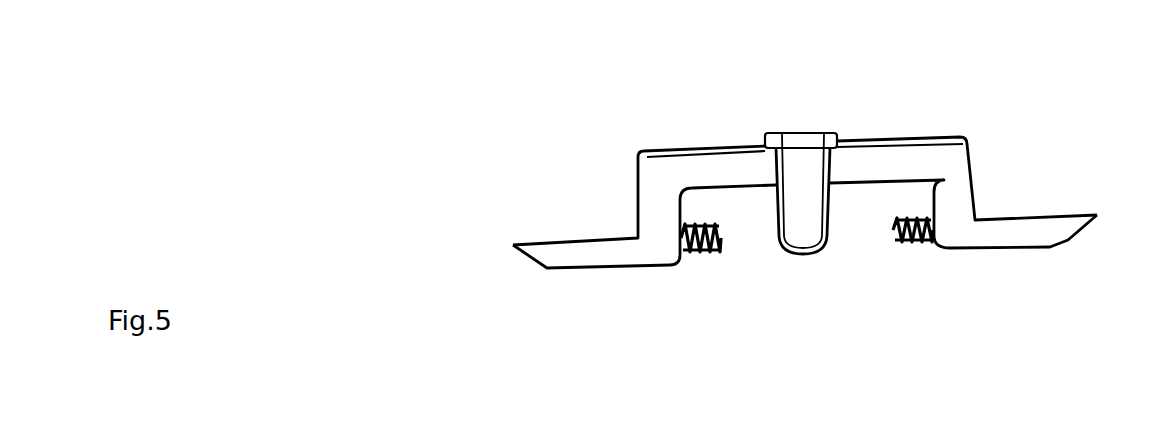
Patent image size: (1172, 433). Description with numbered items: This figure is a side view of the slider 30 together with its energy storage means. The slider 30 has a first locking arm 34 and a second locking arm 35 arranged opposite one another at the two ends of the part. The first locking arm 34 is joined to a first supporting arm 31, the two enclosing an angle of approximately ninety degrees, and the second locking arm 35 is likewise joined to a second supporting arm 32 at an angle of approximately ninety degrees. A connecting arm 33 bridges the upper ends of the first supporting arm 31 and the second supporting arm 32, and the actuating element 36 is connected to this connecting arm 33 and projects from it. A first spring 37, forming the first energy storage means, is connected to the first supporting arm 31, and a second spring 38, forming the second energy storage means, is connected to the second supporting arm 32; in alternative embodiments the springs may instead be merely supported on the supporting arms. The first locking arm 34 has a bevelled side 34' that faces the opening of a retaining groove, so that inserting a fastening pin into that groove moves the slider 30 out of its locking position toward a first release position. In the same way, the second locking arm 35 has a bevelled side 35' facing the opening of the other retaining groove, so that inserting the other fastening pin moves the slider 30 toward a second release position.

The slider 30 is at (814, 174).
The first supporting arm 31 is at (648, 208).
The second supporting arm 32 is at (960, 187).
The connecting arm 33 is at (700, 170).
The first locking arm 34 is at (587, 292).
The bevelled side of first locking arm 34' is at (504, 296).
The second locking arm 35 is at (1010, 277).
The bevelled side of second locking arm 35' is at (1117, 268).
The actuating element 36 is at (810, 237).
The first spring 37 is at (705, 257).
The second spring 38 is at (912, 240).